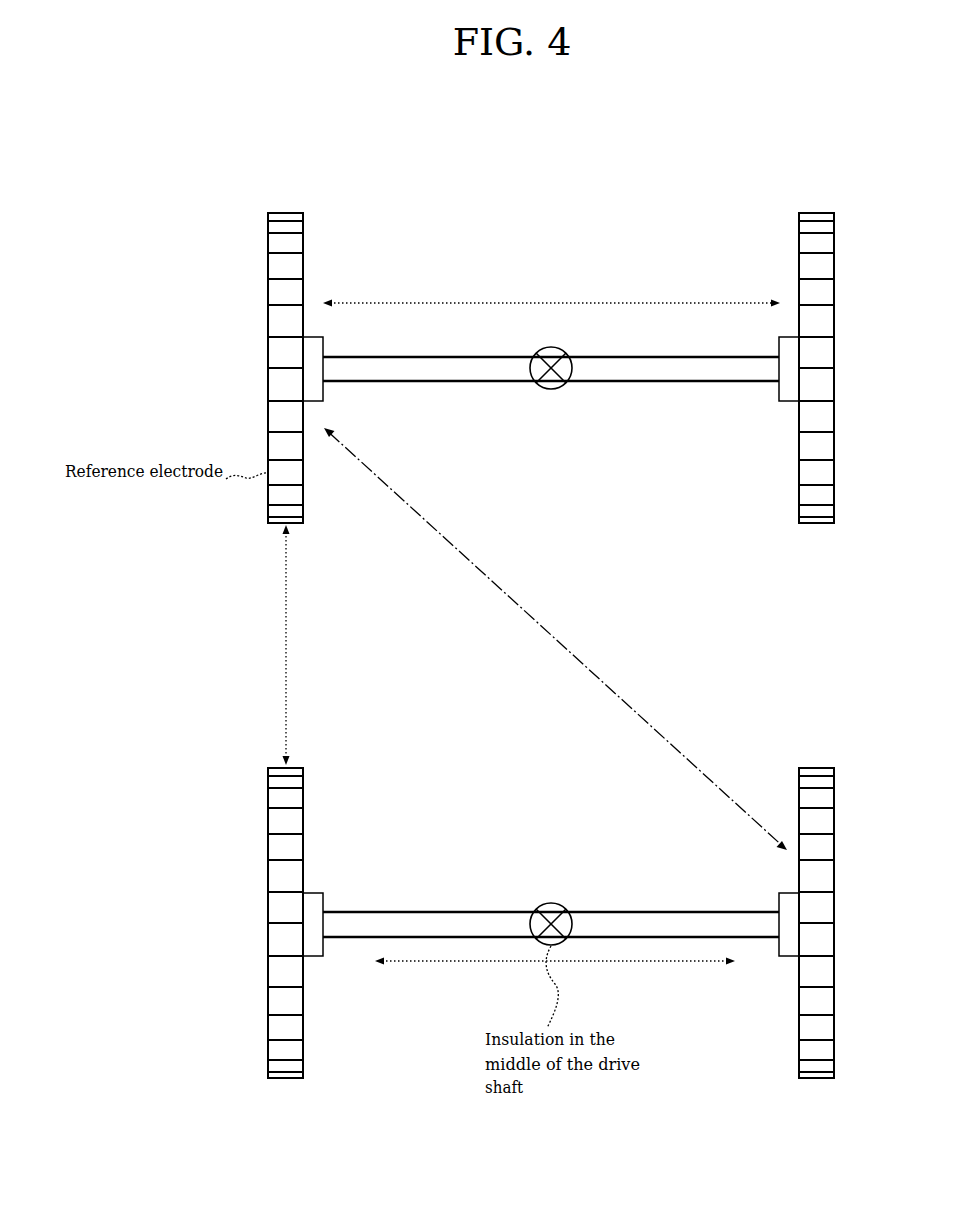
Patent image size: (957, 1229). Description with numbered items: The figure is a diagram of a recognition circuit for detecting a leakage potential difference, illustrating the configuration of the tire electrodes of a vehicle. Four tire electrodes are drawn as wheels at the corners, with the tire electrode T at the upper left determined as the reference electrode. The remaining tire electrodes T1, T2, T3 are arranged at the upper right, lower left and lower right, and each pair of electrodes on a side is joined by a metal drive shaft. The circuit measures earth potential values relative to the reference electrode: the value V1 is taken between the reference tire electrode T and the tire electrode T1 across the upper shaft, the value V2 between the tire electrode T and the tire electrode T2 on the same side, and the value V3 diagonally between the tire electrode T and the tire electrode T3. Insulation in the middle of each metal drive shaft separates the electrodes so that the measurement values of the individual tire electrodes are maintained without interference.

The tire electrode T is at (277, 368).
The tire electrode T1 is at (830, 368).
The tire electrode T2 is at (272, 923).
The tire electrode T3 is at (831, 923).
The earth potential value V1 is at (551, 289).
The earth potential value V2 is at (300, 645).
The earth potential value V3 is at (555, 639).